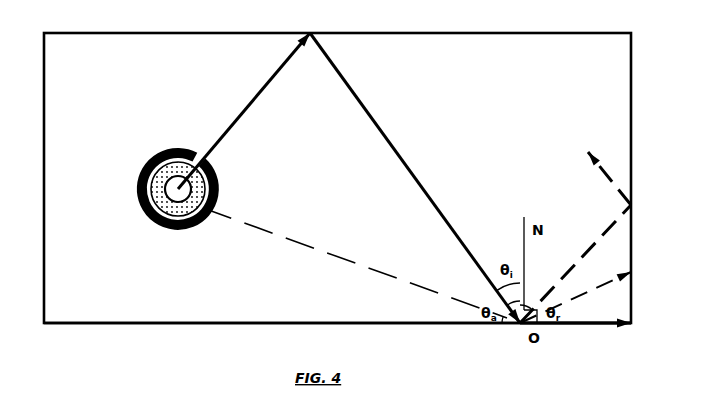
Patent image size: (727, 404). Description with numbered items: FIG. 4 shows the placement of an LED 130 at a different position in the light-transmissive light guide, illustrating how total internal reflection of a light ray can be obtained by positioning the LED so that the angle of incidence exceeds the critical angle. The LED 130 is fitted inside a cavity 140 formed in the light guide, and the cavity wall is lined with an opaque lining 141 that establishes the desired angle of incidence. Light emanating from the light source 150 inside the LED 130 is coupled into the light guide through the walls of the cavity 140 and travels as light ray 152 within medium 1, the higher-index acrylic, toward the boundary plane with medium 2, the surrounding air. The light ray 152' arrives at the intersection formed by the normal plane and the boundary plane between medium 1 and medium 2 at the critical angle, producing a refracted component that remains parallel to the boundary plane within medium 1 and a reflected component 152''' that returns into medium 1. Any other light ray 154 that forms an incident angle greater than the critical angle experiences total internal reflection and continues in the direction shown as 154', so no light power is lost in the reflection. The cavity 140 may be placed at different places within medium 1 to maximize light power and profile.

The medium 1 is at (337, 178).
The medium 2 is at (337, 337).
The LED 130 is at (200, 202).
The cavity 140 is at (218, 178).
The opaque lining 141 is at (148, 217).
The light source 150 is at (148, 163).
The light ray 152 is at (404, 180).
The light ray 152' is at (415, 178).
The reflected component 152''' is at (575, 237).
The light ray 154 is at (355, 263).
The total internal reflection direction 154' is at (575, 289).